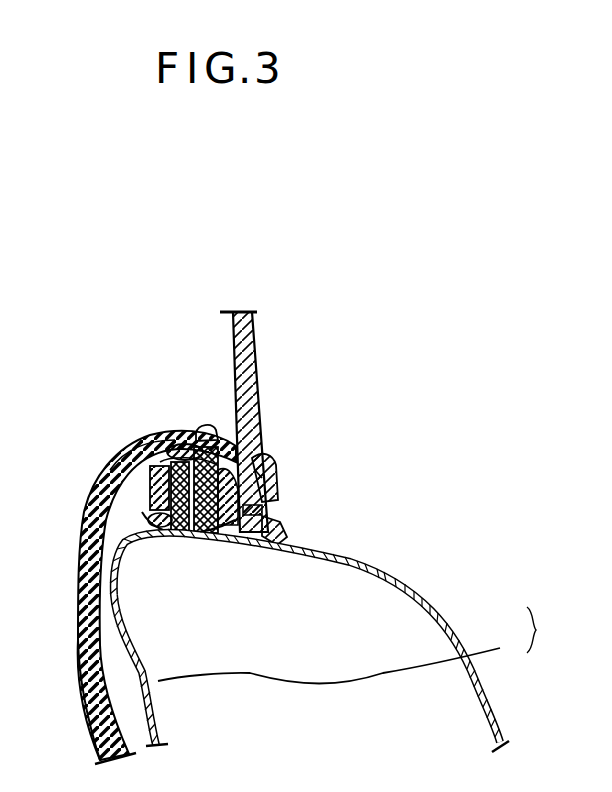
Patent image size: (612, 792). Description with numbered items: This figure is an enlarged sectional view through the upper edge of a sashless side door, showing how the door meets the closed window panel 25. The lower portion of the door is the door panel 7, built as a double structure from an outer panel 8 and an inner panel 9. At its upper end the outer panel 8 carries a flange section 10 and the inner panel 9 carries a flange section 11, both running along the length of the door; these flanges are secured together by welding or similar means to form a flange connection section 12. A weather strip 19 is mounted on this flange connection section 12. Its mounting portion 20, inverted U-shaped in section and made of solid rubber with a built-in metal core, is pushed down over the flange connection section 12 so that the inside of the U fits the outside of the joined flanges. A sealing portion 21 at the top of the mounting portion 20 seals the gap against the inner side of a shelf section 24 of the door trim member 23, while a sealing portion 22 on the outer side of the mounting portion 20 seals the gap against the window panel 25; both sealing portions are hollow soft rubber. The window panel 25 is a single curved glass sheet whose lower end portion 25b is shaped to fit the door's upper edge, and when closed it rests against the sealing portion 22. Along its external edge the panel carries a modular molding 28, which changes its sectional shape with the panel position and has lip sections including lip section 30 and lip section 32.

The door panel 7 is at (334, 637).
The outer panel 8 is at (445, 615).
The inner panel 9 is at (337, 658).
The flange section 10 is at (270, 492).
The flange section 11 is at (150, 513).
The flange connection section 12 is at (192, 433).
The weather strip 19 is at (122, 440).
The mounting portion 20 is at (150, 497).
The sealing portion 21 is at (173, 428).
The sealing portion 22 is at (250, 460).
The door trim member 23 is at (80, 662).
The shelf section 24 is at (142, 433).
The window panel 25 is at (248, 382).
The lower end portion 25b is at (243, 510).
The modular molding 28 is at (284, 463).
The lip section 30 is at (278, 532).
The lip section 32 is at (207, 422).